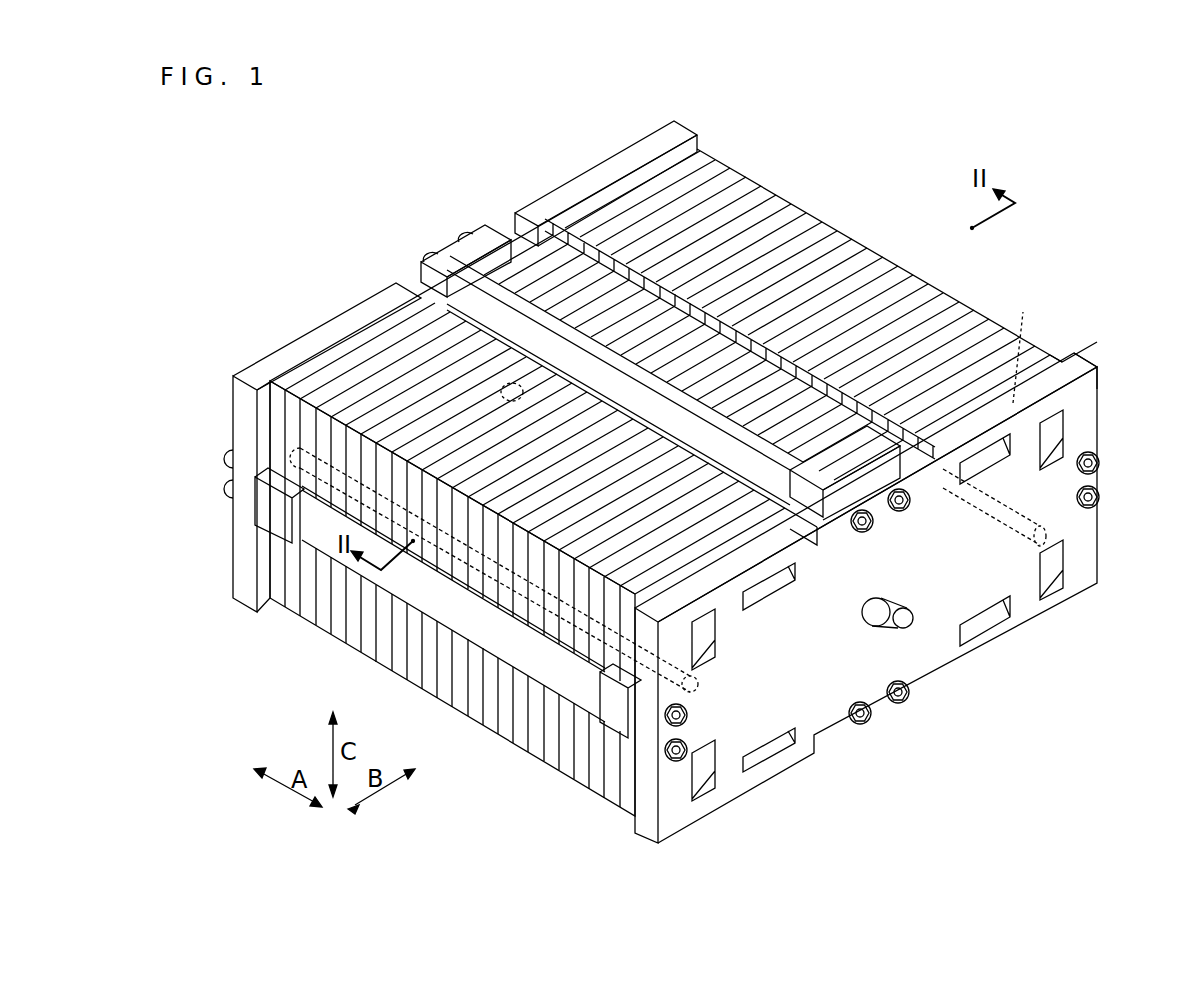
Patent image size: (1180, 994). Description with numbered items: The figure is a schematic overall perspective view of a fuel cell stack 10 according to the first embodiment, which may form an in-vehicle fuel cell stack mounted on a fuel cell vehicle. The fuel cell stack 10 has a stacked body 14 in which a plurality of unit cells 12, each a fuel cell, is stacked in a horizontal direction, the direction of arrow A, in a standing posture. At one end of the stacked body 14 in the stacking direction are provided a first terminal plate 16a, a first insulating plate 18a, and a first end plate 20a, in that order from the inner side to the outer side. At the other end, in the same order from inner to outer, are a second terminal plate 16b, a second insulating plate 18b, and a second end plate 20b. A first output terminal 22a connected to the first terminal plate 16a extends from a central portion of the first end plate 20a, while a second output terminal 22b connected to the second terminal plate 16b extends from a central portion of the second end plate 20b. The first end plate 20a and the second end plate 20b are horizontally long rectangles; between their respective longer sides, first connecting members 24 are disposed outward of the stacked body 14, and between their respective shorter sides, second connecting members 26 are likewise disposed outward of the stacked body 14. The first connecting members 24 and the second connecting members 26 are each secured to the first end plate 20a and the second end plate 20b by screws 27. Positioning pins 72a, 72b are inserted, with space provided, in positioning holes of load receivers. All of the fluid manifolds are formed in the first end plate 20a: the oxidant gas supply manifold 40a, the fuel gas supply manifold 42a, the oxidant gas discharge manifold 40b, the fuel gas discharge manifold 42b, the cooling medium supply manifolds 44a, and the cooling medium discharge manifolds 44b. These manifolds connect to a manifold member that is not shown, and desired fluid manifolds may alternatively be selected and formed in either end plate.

The fuel cell stack 10 is at (368, 160).
The unit cell 12 is at (822, 221).
The stacked body 14 is at (918, 217).
The first terminal plate 16a is at (1055, 342).
The second terminal plate 16b is at (621, 190).
The first insulating plate 18a is at (1047, 353).
The second insulating plate 18b is at (690, 146).
The first end plate 20a is at (1090, 385).
The second end plate 20b is at (248, 360).
The first output terminal 22a is at (914, 617).
The second output terminal 22b is at (452, 378).
The first connecting member 24 is at (573, 313).
The second connecting member 26 is at (1103, 481).
The screw 27 is at (905, 510).
The oxidant gas supply manifold 40a is at (1053, 435).
The oxidant gas discharge manifold 40b is at (707, 790).
The fuel gas supply manifold 42a is at (703, 637).
The fuel gas discharge manifold 42b is at (1053, 565).
The cooling medium supply manifold 44a is at (997, 463).
The cooling medium discharge manifold 44b is at (782, 580).
The positioning pin 72a is at (997, 513).
The positioning pin 72b is at (700, 687).